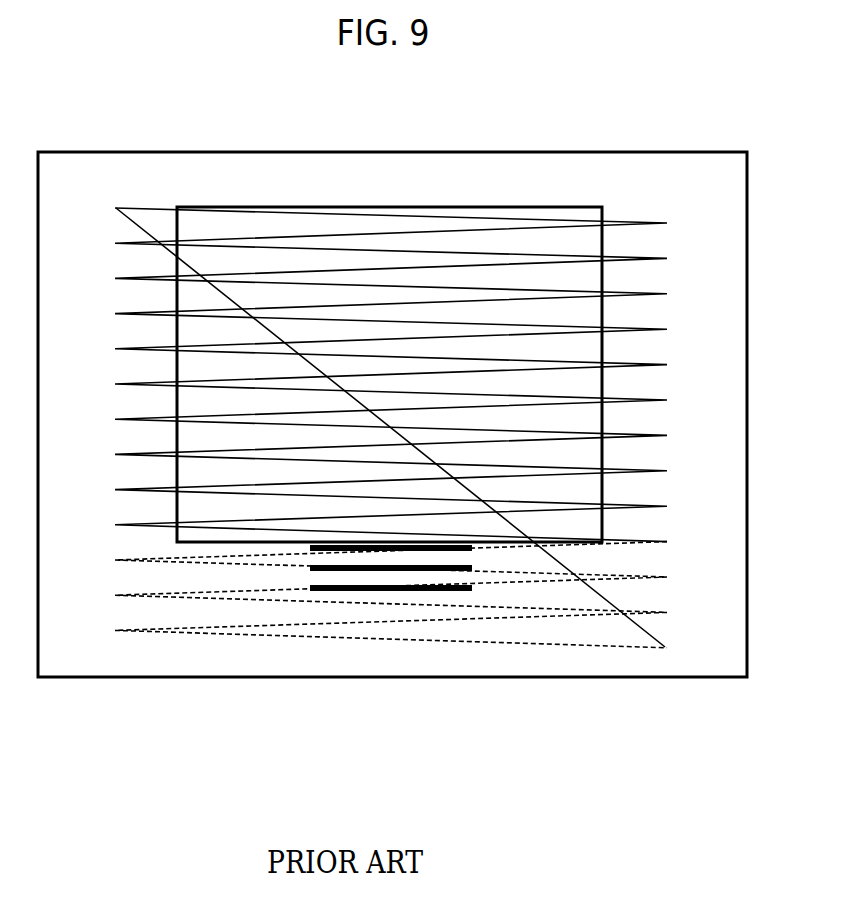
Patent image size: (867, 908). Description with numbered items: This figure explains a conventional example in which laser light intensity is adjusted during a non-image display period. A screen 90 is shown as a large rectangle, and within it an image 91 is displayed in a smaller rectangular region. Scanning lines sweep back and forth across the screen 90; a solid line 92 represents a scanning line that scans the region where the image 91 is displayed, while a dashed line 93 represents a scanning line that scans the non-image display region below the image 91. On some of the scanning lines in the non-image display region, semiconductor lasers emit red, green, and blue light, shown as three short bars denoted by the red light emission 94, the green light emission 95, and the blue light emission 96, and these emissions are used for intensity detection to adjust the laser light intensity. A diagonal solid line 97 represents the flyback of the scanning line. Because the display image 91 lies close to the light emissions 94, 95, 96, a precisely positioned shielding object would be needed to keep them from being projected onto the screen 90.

The screen 90 is at (747, 152).
The image 91 is at (578, 207).
The solid line 92 is at (660, 222).
The dashed line 93 is at (660, 577).
The red light emission 94 is at (336, 551).
The green light emission 95 is at (371, 571).
The blue light emission 96 is at (406, 591).
The solid line (flyback) 97 is at (645, 630).